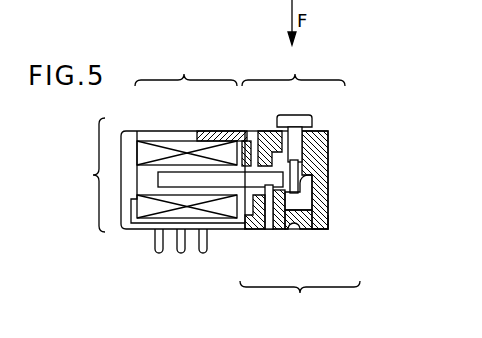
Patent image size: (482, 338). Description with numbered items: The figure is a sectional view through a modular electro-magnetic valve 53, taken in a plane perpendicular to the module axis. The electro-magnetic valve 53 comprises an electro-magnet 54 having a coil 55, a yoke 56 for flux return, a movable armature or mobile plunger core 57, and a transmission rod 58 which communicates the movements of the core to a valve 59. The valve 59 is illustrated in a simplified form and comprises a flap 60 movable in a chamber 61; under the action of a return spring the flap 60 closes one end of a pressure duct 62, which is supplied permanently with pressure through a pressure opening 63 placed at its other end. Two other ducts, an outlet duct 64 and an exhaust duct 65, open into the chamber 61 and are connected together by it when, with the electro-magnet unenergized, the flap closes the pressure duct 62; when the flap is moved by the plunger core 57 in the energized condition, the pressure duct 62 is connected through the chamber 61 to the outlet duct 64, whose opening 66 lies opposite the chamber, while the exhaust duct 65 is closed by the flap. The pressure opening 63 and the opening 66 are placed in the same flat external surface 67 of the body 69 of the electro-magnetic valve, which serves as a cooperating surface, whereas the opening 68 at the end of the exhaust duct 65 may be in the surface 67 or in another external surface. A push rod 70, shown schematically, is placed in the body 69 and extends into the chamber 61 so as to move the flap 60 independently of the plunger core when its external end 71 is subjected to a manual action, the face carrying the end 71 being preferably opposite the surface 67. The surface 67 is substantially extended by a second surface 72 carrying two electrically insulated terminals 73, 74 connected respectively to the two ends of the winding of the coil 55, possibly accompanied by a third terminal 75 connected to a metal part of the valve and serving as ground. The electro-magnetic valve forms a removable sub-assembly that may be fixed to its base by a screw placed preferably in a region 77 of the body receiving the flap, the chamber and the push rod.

The electro-magnetic valve 53 is at (82, 175).
The electro-magnet 54 is at (186, 139).
The coil 55 is at (140, 148).
The yoke 56 is at (207, 133).
The mobile plunger core 57 is at (168, 178).
The transmission rod 58 is at (246, 134).
The valve 59 is at (293, 73).
The flap 60 is at (306, 180).
The chamber 61 is at (277, 158).
The pressure duct 62 is at (300, 185).
The pressure opening 63 is at (290, 232).
The outlet duct 64 is at (334, 233).
The exhaust duct 65 is at (244, 232).
The opening 66 is at (316, 233).
The flat external surface 67 is at (338, 238).
The opening 68 is at (262, 232).
The body 69 is at (318, 131).
The push rod 70 is at (286, 123).
The external end 71 is at (306, 127).
The second surface 72 is at (120, 236).
The terminal 73 is at (156, 244).
The terminal 74 is at (208, 243).
The third terminal 75 is at (180, 244).
The region 77 is at (300, 299).